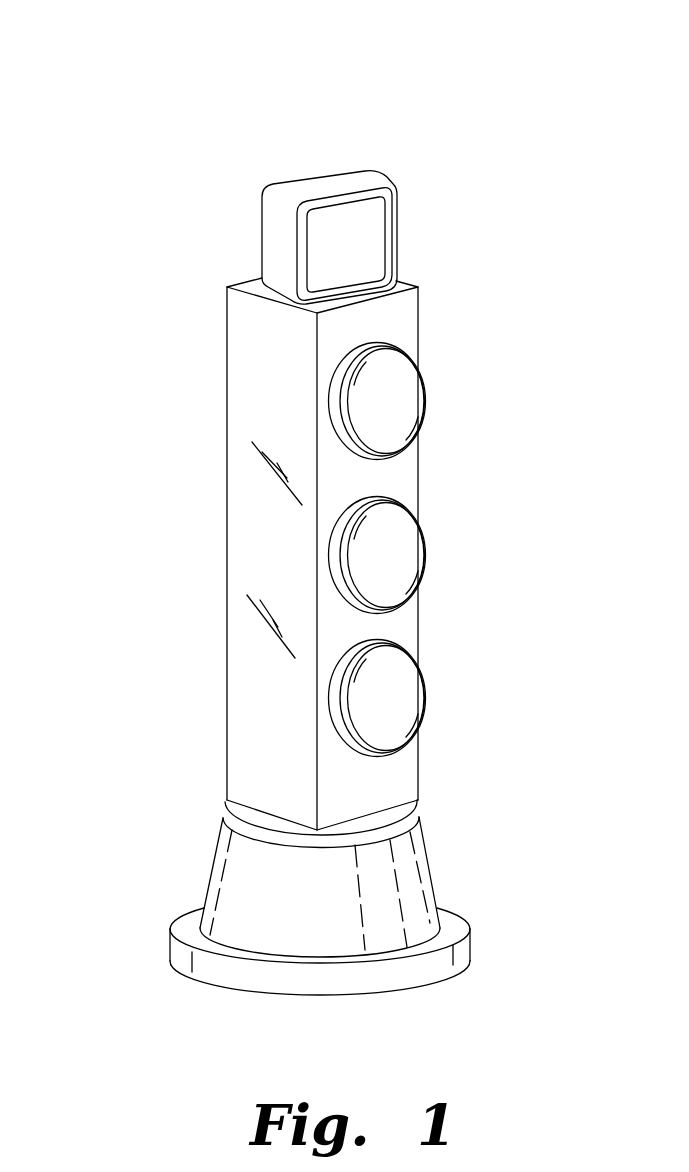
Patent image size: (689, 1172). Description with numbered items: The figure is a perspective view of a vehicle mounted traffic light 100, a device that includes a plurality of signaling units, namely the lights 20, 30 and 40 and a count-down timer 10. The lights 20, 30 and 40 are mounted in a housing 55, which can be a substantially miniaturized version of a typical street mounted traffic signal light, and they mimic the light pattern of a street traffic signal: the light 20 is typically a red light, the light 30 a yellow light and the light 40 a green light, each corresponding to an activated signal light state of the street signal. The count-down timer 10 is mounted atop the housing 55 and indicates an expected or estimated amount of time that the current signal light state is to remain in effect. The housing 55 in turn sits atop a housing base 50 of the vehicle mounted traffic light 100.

The vehicle mounted traffic light 100 is at (140, 72).
The count-down timer 10 is at (395, 230).
The light 20 is at (425, 392).
The light 30 is at (425, 548).
The light 40 is at (425, 692).
The housing base 50 is at (428, 865).
The housing 55 is at (225, 542).